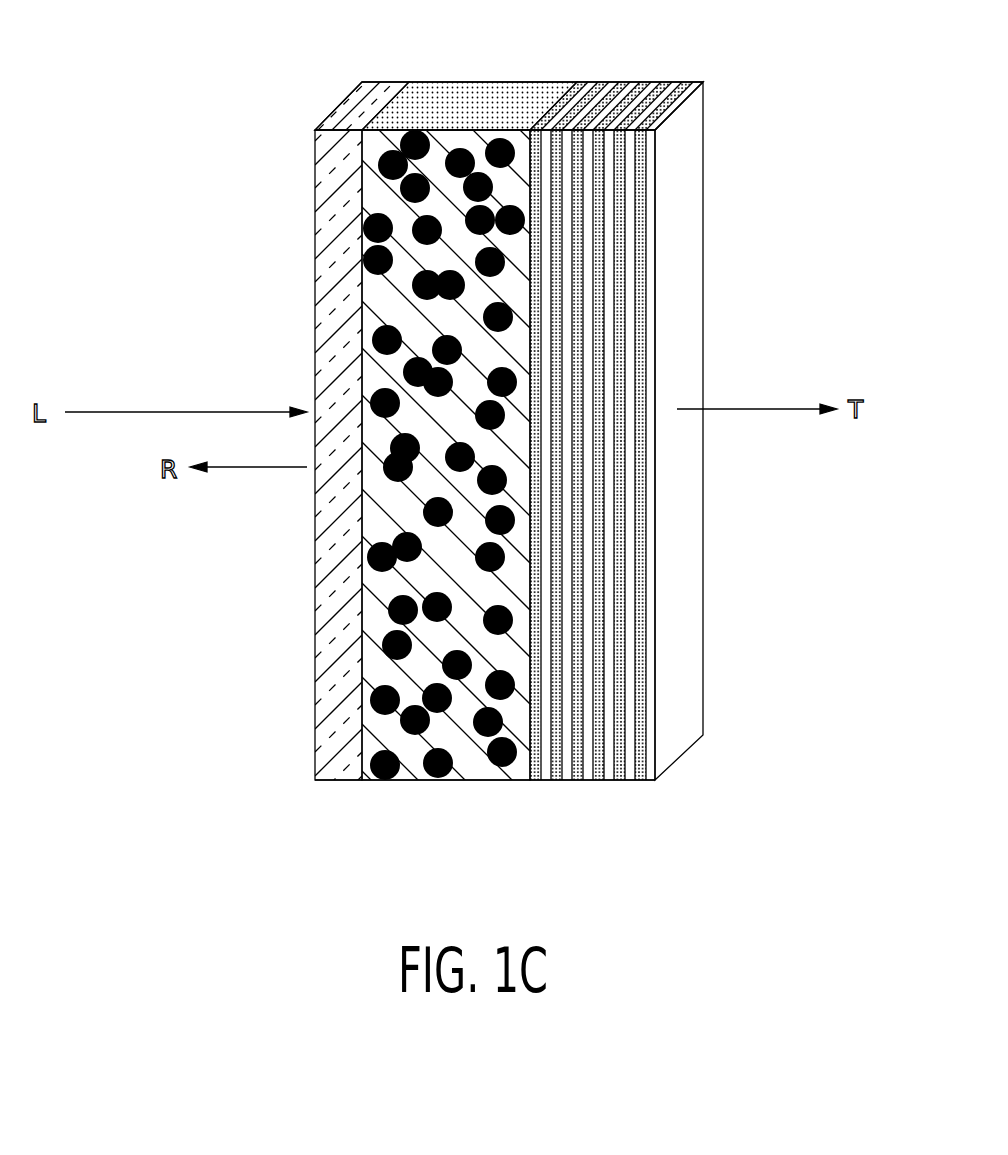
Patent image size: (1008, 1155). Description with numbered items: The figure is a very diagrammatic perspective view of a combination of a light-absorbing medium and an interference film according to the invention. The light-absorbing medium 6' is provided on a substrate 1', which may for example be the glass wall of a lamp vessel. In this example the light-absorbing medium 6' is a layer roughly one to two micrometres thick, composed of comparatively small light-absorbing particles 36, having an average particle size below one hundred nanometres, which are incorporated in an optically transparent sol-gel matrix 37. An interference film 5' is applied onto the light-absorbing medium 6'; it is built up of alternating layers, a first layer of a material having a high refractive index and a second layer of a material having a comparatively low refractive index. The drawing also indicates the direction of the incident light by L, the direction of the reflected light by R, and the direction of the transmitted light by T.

The substrate 1' is at (323, 458).
The light-absorbing medium 6' is at (469, 465).
The interference film 5' is at (616, 465).
The sol-gel matrix 37 is at (373, 153).
The light-absorbing particles 36 is at (500, 148).